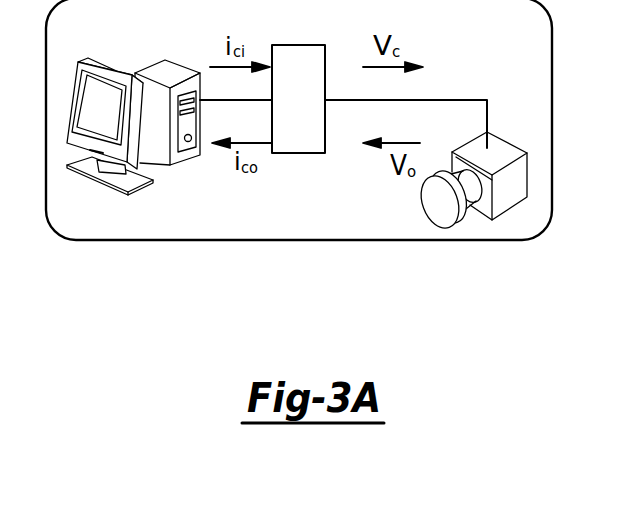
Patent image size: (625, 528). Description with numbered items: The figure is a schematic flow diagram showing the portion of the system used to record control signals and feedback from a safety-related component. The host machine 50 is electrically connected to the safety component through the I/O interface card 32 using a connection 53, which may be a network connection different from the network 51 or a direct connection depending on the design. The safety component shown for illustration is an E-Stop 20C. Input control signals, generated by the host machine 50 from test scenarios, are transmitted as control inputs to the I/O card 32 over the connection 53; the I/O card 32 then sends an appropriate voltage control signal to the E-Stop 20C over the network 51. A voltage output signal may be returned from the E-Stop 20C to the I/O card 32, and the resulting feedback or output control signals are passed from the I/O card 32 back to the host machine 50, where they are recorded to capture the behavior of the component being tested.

The E-Stop 20C is at (443, 205).
The I/O interface card 32 is at (297, 153).
The host machine 50 is at (143, 189).
The network 51 is at (459, 100).
The connection 53 is at (241, 100).